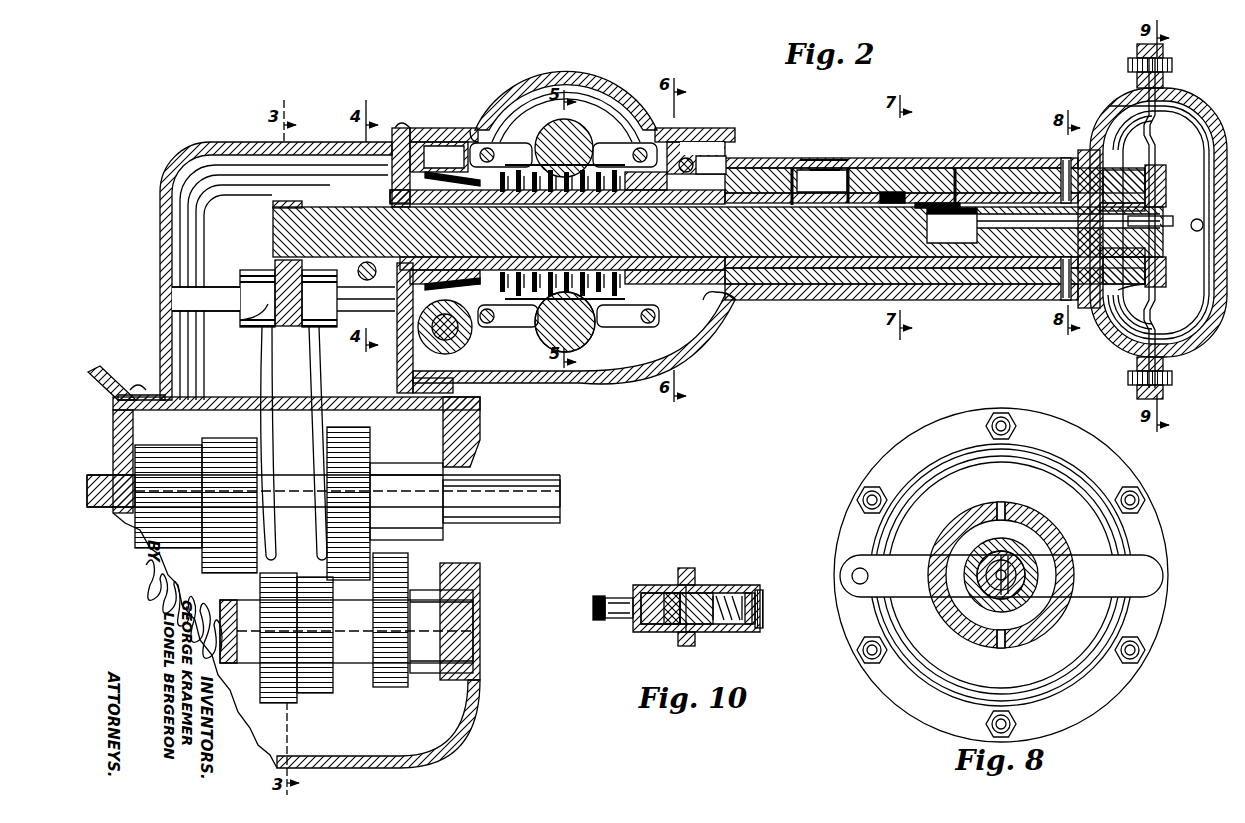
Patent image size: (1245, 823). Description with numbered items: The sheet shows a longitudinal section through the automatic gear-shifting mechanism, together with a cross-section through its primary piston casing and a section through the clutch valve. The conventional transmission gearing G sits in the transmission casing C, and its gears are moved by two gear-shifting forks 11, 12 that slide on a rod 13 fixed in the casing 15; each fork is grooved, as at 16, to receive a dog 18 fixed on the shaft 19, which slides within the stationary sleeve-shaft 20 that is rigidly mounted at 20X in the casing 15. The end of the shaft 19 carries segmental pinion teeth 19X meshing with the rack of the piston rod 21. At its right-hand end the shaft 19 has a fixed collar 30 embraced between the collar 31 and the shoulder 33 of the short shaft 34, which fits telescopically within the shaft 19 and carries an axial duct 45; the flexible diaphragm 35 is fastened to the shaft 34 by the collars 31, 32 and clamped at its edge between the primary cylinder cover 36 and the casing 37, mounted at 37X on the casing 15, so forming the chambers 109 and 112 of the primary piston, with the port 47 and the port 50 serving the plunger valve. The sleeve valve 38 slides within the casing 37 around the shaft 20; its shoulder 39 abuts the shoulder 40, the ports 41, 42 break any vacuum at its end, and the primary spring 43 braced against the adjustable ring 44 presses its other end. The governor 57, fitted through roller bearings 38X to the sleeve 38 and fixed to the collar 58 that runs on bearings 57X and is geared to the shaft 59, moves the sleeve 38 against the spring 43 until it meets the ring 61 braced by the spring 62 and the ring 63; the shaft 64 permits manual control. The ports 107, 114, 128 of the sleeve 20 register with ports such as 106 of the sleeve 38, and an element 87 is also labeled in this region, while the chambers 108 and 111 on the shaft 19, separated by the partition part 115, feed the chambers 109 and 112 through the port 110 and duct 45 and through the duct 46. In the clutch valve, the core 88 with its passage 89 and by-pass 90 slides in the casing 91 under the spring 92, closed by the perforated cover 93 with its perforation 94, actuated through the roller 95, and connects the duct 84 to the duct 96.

In FIG. 2, the gear-shifting fork 11 is at (322, 368).
In FIG. 2, the gear-shifting fork 12 is at (262, 392).
In FIG. 2, the rod 13 is at (240, 290).
In FIG. 2, the casing 15 is at (162, 178).
In FIG. 2, the groove 16 is at (258, 324).
In FIG. 2, the dog 18 is at (270, 296).
In FIG. 2, the shaft 19 is at (273, 236).
In FIG. 8, the shaft 19 is at (978, 565).
In FIG. 2, the segmental pinion teeth 19X is at (280, 266).
In FIG. 2, the stationary sleeve-shaft 20 is at (690, 280).
In FIG. 2, the mounting of sleeve-shaft 20X is at (392, 196).
In FIG. 2, the piston rod 21 is at (337, 296).
In FIG. 2, the fixed collar 30 is at (1138, 172).
In FIG. 2, the collar of primary piston 31 is at (1144, 288).
In FIG. 2, the collar 32 is at (1166, 266).
In FIG. 2, the shoulder 33 is at (1144, 262).
In FIG. 2, the short shaft 34 is at (1136, 204).
In FIG. 8, the short shaft 34 is at (978, 542).
In FIG. 2, the flexible diaphragm 35 is at (1180, 155).
In FIG. 2, the primary cylinder cover 36 is at (1226, 325).
In FIG. 2, the casing 37 is at (1006, 162).
In FIG. 8, the casing 37 is at (958, 630).
In FIG. 2, the mounting of casing 37X is at (462, 396).
In FIG. 2, the sleeve valve 38 is at (774, 160).
In FIG. 2, the roller bearings 38X is at (696, 156).
In FIG. 2, the shoulder of sleeve valve 39 is at (716, 300).
In FIG. 2, the shoulder of casing 40 is at (731, 305).
In FIG. 2, the port 41 is at (1064, 158).
In FIG. 8, the port 41 is at (1001, 502).
In FIG. 2, the port 42 is at (1062, 300).
In FIG. 8, the port 42 is at (1001, 648).
In FIG. 2, the primary spring 43 is at (628, 316).
In FIG. 2, the ring 44 is at (508, 316).
In FIG. 2, the axial duct 45 is at (1168, 226).
In FIG. 8, the axial duct 45 is at (1012, 548).
In FIG. 8, the duct 46 is at (1028, 568).
In FIG. 2, the port 47 is at (1197, 231).
In FIG. 8, the port 50 is at (868, 578).
In FIG. 2, the governor 57 is at (560, 120).
In FIG. 2, the bearings 57X is at (445, 164).
In FIG. 2, the collar 58 is at (474, 130).
In FIG. 2, the shaft 59 is at (448, 344).
In FIG. 2, the ring 61 is at (585, 165).
In FIG. 2, the spring 62 is at (547, 332).
In FIG. 2, the ring 63 is at (536, 133).
In FIG. 2, the shaft 64 is at (702, 165).
In FIG. 10, the duct 84 is at (687, 646).
In FIG. 2, the ring 87 is at (846, 170).
In FIG. 10, the clutch valve core 88 is at (652, 632).
In FIG. 10, the passage 89 is at (672, 590).
In FIG. 10, the by-pass 90 is at (700, 632).
In FIG. 10, the casing 91 is at (738, 588).
In FIG. 10, the spring 92 is at (740, 632).
In FIG. 10, the cover 93 is at (762, 600).
In FIG. 10, the perforation 94 is at (764, 610).
In FIG. 10, the roller 95 is at (592, 612).
In FIG. 10, the duct 96 is at (687, 568).
In FIG. 2, the port 106 is at (850, 168).
In FIG. 2, the port 107 is at (818, 170).
In FIG. 2, the chamber 108 is at (930, 203).
In FIG. 2, the chamber 109 is at (1222, 108).
In FIG. 2, the port 110 is at (952, 225).
In FIG. 2, the chamber 111 is at (787, 168).
In FIG. 2, the chamber 112 is at (1135, 122).
In FIG. 2, the port 114 is at (890, 192).
In FIG. 2, the partition part 115 is at (822, 181).
In FIG. 2, the port 128 is at (956, 178).
In FIG. 2, the transmission gearing G is at (378, 450).
In FIG. 2, the transmission casing C is at (448, 742).